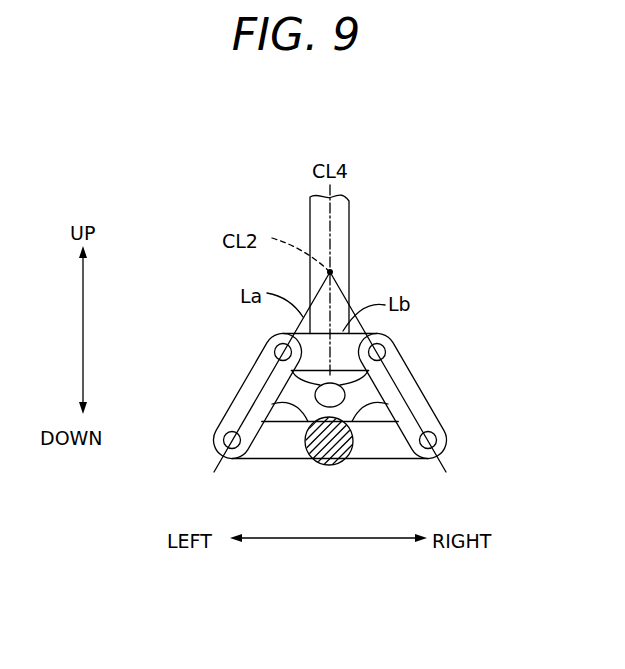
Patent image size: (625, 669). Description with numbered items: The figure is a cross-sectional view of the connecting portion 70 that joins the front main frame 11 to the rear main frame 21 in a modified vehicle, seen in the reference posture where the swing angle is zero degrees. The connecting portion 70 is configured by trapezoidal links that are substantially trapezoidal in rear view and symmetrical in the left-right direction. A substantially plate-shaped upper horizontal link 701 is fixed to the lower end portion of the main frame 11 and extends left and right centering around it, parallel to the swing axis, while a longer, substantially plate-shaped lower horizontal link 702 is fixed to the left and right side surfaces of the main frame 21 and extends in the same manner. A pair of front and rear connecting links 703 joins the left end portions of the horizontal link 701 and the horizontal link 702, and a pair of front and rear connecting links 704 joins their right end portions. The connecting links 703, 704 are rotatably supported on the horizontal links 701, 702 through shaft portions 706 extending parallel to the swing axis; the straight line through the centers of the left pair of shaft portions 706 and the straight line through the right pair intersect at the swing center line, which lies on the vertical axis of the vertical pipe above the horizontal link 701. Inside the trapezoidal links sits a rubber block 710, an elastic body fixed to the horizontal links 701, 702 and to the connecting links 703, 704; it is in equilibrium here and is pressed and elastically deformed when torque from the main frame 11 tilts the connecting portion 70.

The front main frame 11 is at (350, 247).
The connecting portion 70 is at (450, 270).
The horizontal link 701 is at (337, 333).
The horizontal link 702 is at (280, 459).
The connecting links 703 is at (246, 375).
The connecting links 704 is at (421, 392).
The shaft portions 706 is at (268, 343).
The rubber block 710 is at (358, 403).
The rear main frame 21 is at (343, 461).